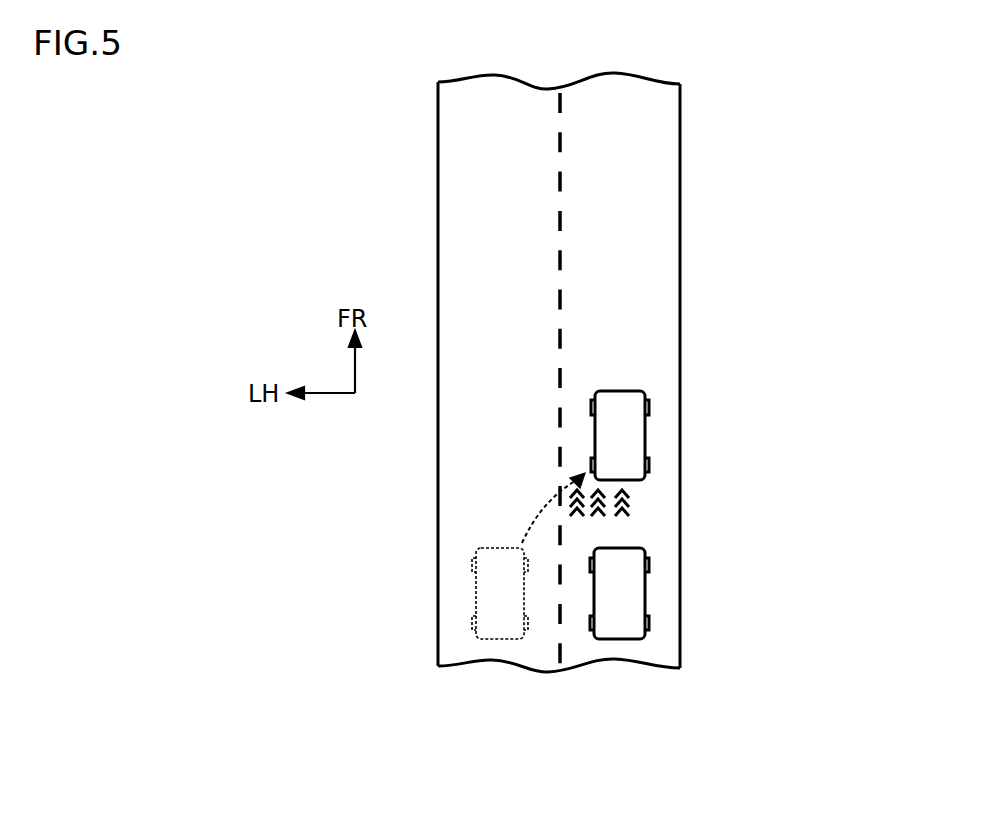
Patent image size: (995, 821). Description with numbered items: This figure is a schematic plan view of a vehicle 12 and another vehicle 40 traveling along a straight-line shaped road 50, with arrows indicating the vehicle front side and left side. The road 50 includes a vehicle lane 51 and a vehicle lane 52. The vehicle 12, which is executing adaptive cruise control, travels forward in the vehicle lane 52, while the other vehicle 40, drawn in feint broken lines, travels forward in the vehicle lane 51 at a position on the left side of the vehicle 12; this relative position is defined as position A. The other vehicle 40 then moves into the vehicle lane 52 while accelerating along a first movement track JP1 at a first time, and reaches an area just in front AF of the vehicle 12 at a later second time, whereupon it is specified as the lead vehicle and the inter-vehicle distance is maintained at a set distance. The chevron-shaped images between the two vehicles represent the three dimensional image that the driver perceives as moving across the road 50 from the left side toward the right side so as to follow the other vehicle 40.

The road 50 is at (672, 284).
The vehicle lane 51 is at (490, 653).
The vehicle lane 52 is at (635, 653).
The other vehicle 40 is at (660, 430).
The area just in front AF is at (660, 468).
The vehicle 12 is at (658, 592).
The first movement track JP1 is at (546, 512).